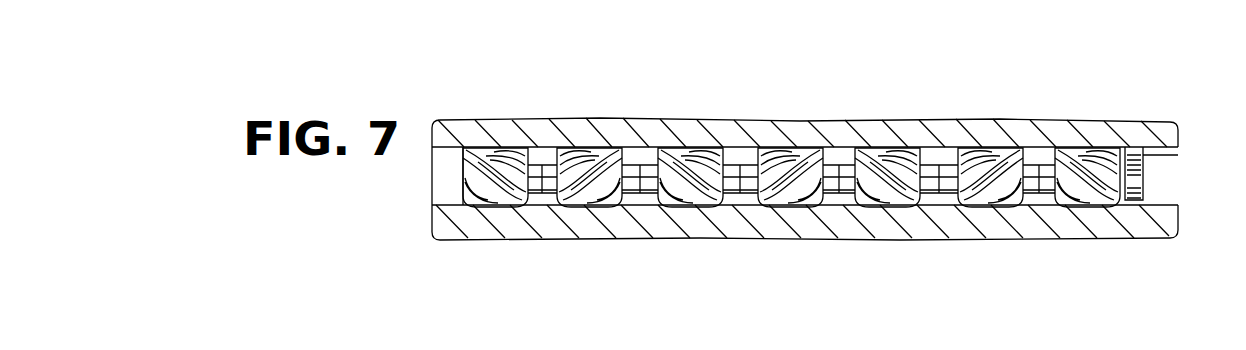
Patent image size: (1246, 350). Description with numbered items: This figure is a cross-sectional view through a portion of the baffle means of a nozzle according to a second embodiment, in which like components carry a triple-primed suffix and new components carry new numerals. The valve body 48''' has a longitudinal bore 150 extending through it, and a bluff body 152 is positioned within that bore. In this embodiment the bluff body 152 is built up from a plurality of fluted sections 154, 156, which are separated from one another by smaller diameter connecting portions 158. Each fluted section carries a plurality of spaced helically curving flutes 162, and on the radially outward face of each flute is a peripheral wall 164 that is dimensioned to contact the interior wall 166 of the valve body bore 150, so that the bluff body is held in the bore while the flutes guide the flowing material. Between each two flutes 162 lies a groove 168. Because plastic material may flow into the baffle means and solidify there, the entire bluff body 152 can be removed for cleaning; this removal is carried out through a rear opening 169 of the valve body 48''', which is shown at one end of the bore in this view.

The valve body 48''' is at (805, 102).
The longitudinal bore 150 is at (728, 148).
The bluff body 152 is at (448, 178).
The fluted section 154 is at (887, 147).
The fluted section 156 is at (1005, 147).
The connecting portion 158 is at (936, 194).
The helically curving flute 162 is at (588, 162).
The peripheral wall 164 is at (574, 193).
The interior wall 166 is at (738, 200).
The groove 168 is at (537, 147).
The rear opening 169 is at (1163, 150).